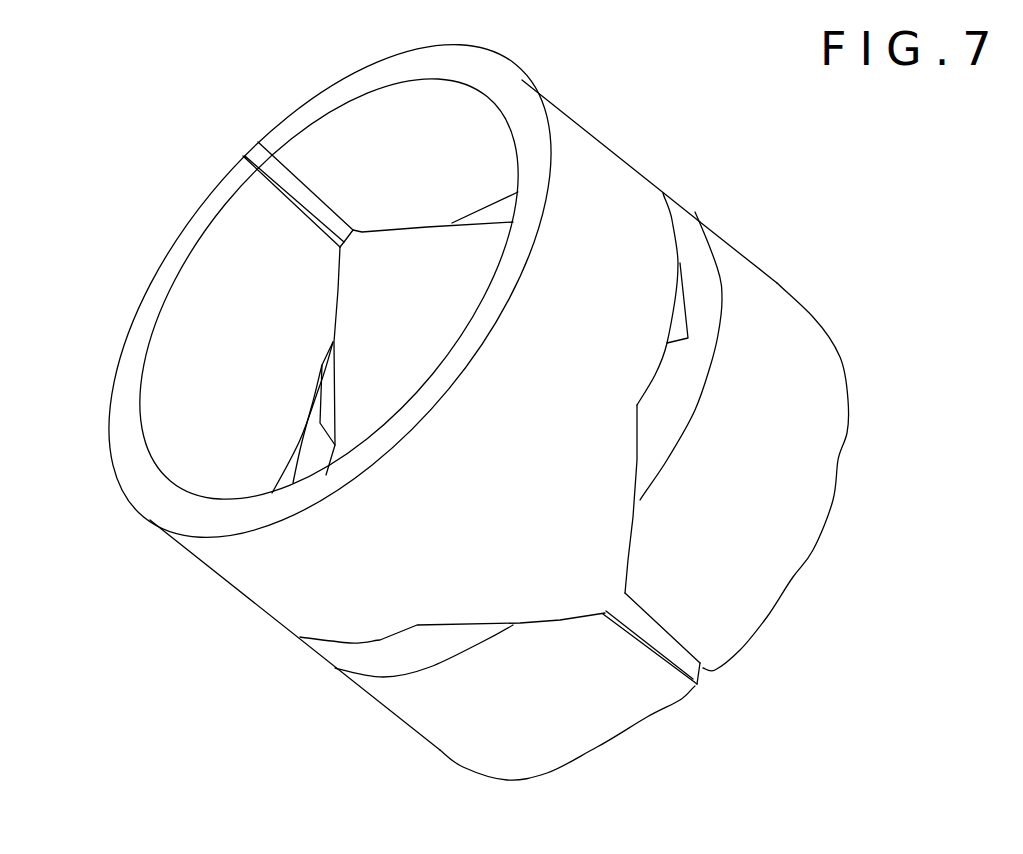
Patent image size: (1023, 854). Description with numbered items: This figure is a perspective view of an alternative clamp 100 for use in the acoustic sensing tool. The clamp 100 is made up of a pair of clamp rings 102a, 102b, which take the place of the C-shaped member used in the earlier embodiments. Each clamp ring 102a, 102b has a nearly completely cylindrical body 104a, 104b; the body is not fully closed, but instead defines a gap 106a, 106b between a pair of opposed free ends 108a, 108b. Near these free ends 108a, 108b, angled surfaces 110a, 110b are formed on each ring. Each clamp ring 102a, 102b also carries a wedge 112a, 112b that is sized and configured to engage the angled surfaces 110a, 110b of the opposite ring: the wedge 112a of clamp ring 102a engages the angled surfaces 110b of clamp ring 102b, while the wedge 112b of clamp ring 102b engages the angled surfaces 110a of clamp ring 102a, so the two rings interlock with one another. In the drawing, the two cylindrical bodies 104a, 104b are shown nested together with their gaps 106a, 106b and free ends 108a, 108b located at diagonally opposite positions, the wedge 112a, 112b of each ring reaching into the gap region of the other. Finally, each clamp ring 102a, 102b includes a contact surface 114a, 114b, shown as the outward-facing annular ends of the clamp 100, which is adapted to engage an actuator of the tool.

The clamp 100 is at (158, 147).
The clamp ring 102a is at (255, 582).
The clamp ring 102b is at (478, 760).
The cylindrical body 104a is at (600, 157).
The cylindrical body 104b is at (775, 298).
The gap 106a is at (250, 140).
The gap 106b is at (708, 686).
The free ends 108a is at (300, 183).
The free ends 108b is at (677, 647).
The angled surfaces 110a is at (430, 227).
The angled surfaces 110b is at (625, 550).
The wedge 112a is at (385, 267).
The wedge 112b is at (613, 507).
The contact surface 114a is at (133, 472).
The contact surface 114b is at (793, 575).